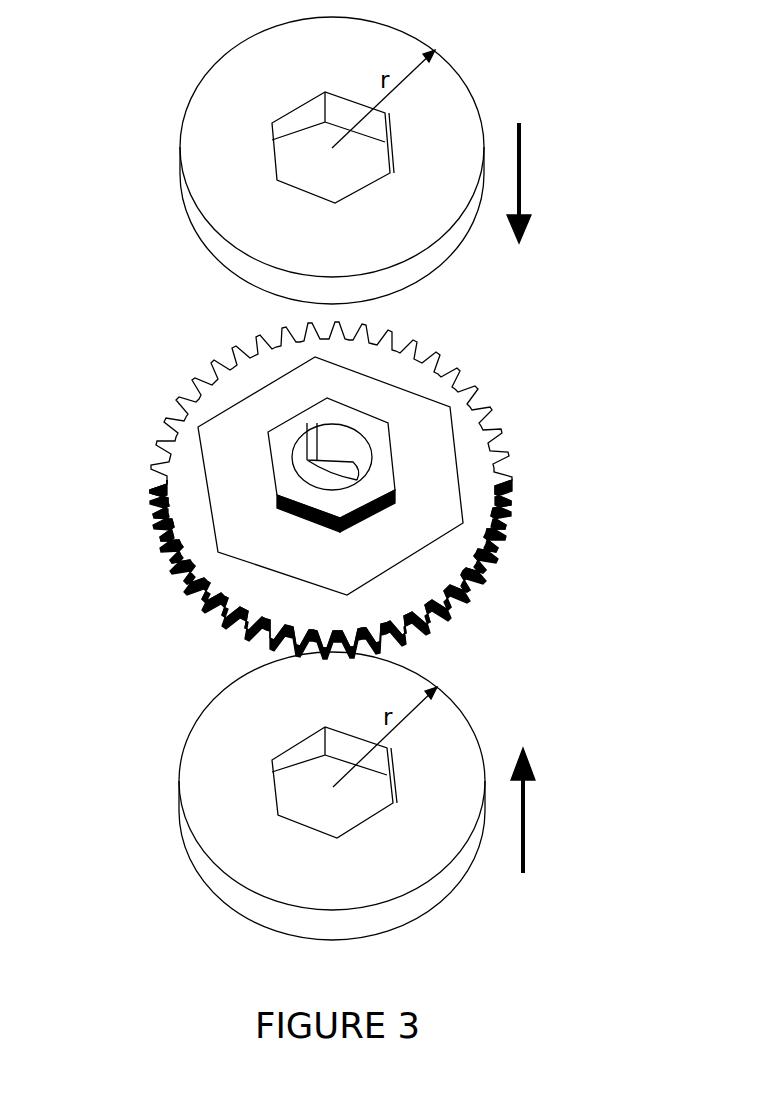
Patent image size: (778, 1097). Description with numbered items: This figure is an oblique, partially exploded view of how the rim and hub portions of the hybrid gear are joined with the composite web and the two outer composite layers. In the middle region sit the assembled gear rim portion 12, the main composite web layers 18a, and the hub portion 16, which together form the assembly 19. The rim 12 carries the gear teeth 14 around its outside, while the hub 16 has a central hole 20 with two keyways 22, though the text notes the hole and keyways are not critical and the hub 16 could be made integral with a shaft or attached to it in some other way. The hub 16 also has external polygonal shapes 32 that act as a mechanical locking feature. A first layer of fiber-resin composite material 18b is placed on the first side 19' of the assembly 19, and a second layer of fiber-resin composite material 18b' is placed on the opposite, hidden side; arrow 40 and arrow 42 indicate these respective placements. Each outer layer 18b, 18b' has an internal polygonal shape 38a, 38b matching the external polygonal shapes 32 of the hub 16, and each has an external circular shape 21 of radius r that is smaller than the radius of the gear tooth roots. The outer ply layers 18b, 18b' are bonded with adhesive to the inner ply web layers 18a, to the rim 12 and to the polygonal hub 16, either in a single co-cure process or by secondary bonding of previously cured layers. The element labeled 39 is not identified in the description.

The gear rim portion 12 is at (365, 600).
The gear teeth 14 is at (510, 510).
The hub portion 16 is at (280, 460).
The main composite web layers 18a is at (213, 433).
The first layer of fiber-resin composite material 18b is at (289, 147).
The second layer of fiber-resin composite material 18b' is at (278, 781).
The assembly 19 is at (613, 338).
The first side 19' is at (98, 512).
The hole 20 is at (322, 477).
The external circular shape 21 is at (220, 247).
The keyways 22 is at (392, 456).
The external polygonal shapes 32 is at (397, 470).
The internal polygonal shape 38a is at (383, 157).
The internal polygonal shape 38b is at (390, 790).
The plate corner 39 is at (293, 507).
The arrow 40 is at (522, 170).
The arrow 42 is at (525, 827).